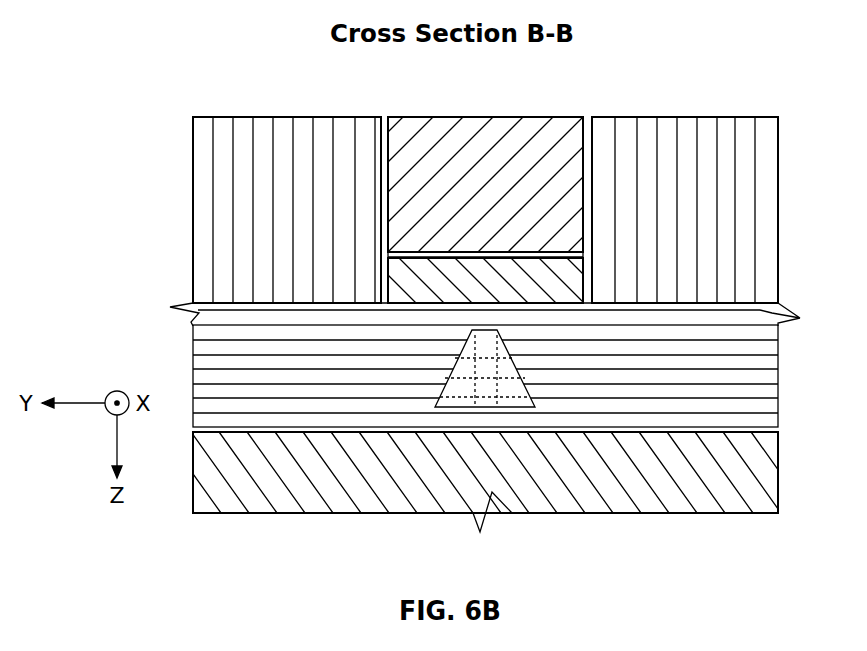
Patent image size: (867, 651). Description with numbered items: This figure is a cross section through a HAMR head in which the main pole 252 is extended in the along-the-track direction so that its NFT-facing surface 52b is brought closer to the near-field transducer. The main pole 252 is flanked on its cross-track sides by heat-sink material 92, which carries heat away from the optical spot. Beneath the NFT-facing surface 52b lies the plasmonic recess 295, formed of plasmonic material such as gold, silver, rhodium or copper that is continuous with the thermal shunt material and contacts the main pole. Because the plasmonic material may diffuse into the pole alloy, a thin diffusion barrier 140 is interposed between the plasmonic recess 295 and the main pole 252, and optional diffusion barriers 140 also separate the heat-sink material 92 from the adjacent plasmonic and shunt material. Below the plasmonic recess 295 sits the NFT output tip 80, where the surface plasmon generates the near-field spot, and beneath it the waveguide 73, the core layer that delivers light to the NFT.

The heat-sink material 92 is at (300, 140).
The main pole 252 is at (487, 150).
The diffusion barrier 140 is at (384, 160).
The NFT-facing surface of the main pole 52b is at (527, 250).
The plasmonic recess 295 is at (447, 305).
The output tip 80 is at (512, 387).
The waveguide 73 is at (648, 490).